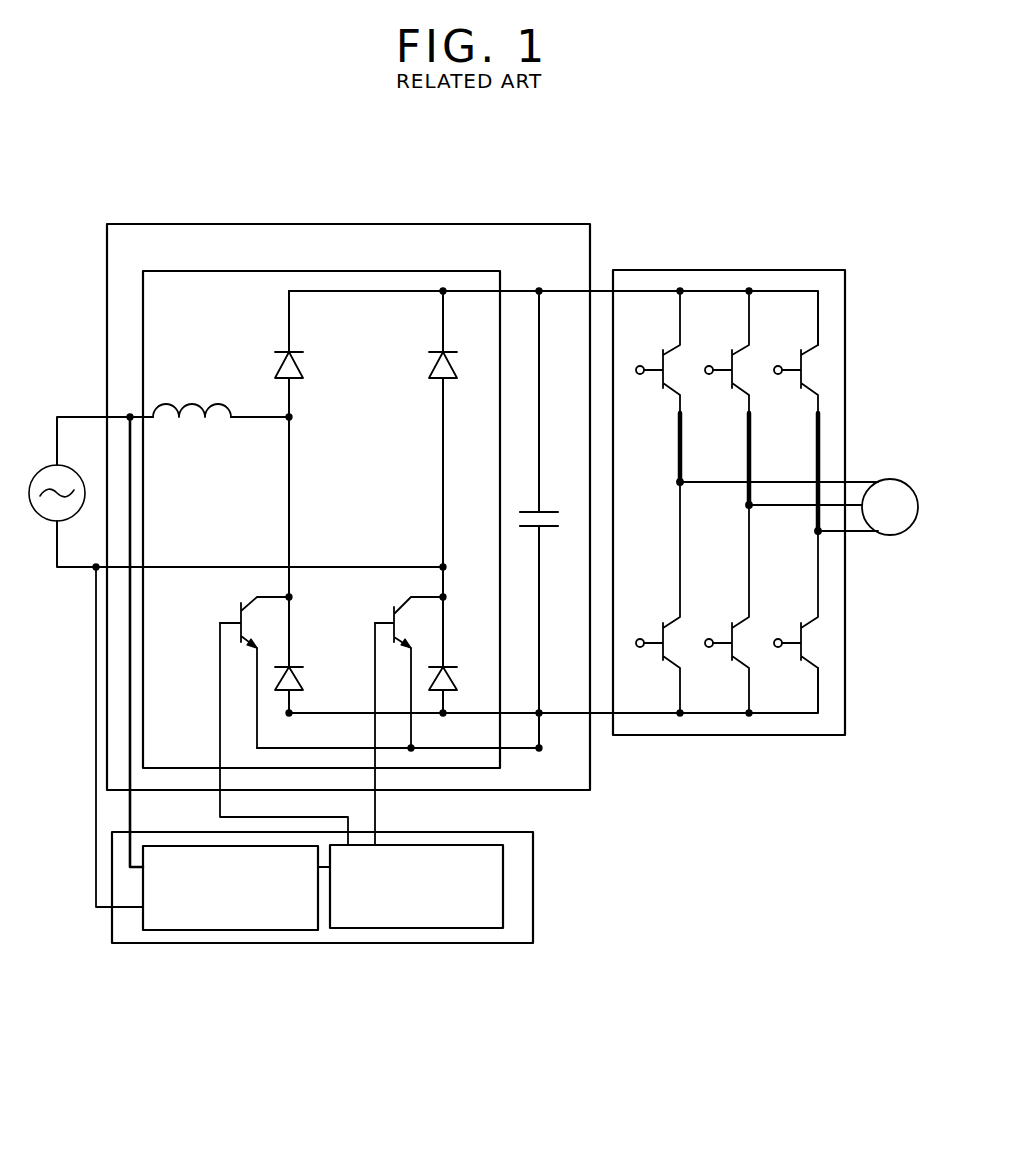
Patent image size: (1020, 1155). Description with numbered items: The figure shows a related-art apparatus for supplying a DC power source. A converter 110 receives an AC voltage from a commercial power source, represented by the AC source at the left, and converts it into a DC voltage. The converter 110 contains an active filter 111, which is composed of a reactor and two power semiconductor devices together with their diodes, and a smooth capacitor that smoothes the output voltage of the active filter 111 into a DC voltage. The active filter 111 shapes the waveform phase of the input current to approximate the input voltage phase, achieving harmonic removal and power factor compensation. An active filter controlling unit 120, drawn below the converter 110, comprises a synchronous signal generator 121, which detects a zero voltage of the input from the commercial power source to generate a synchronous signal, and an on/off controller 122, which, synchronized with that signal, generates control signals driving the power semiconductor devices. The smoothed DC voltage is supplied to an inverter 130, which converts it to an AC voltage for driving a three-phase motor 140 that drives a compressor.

The converter 110 is at (335, 224).
The active filter 111 is at (247, 271).
The active filter controlling unit 120 is at (322, 946).
The synchronous signal generator 121 is at (230, 933).
The on/off controller 122 is at (415, 931).
The inverter 130 is at (710, 270).
The three-phase motor 140 is at (888, 479).